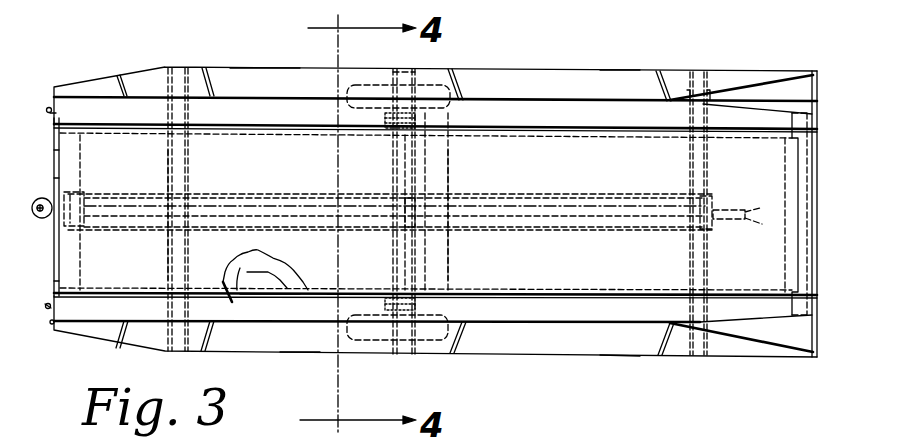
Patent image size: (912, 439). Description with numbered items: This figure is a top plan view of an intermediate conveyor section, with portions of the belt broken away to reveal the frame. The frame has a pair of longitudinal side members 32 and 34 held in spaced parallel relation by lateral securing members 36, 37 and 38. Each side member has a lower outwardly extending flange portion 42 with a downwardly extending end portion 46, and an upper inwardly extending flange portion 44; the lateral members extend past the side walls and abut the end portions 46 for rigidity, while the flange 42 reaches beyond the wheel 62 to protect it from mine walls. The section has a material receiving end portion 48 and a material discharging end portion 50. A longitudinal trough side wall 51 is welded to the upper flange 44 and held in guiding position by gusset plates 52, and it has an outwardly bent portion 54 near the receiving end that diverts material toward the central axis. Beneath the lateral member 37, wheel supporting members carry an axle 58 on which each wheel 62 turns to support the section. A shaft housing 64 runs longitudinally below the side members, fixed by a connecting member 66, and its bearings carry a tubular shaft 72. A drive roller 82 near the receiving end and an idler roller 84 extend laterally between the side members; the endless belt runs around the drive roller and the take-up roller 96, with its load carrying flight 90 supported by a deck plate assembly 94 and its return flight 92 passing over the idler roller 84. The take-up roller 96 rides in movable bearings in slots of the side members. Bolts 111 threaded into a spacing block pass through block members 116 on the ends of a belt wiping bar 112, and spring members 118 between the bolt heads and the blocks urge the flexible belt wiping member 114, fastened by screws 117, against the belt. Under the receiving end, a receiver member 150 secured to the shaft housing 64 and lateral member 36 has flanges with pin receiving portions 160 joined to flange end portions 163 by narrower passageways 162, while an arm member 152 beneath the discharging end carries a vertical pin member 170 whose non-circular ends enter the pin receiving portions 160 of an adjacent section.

The longitudinal side member 32 is at (509, 86).
The longitudinal side member 34 is at (532, 348).
The lateral securing member 36 is at (706, 80).
The lateral securing member 37 is at (418, 82).
The lateral securing member 38 is at (162, 80).
The lower outwardly extending flange portion 42 is at (256, 77).
The upper inwardly extending flange portion 44 is at (268, 290).
The downwardly extending end portion 46 is at (619, 70).
The material receiving end portion 48 is at (780, 171).
The material discharging end portion 50 is at (89, 157).
The longitudinal trough side wall 51 is at (222, 120).
The gusset plate 52 is at (203, 82).
The outwardly bent portion 54 is at (759, 104).
The axle 58 is at (405, 73).
The wheel 62 is at (383, 82).
The shaft housing 64 is at (595, 198).
The connecting member 66 is at (165, 192).
The tubular shaft 72 is at (282, 197).
The drive roller 82 is at (785, 264).
The idler roller 84 is at (452, 264).
The load carrying flight 90 is at (554, 265).
The return flight 92 is at (248, 282).
The deck plate assembly 94 is at (233, 277).
The take-up roller 96 is at (85, 268).
The bolt 111 is at (52, 113).
The belt wiping bar 112 is at (56, 152).
The flexible belt wiping member 114 is at (57, 178).
The block member 116 is at (48, 107).
The screw 117 is at (57, 281).
The spring member 118 is at (47, 309).
The receiver member 150 is at (718, 200).
The arm member 152 is at (43, 218).
The pin receiving portion 160 is at (748, 220).
The passageway 162 is at (765, 224).
The flange end portion 163 is at (762, 210).
The pin member 170 is at (36, 200).